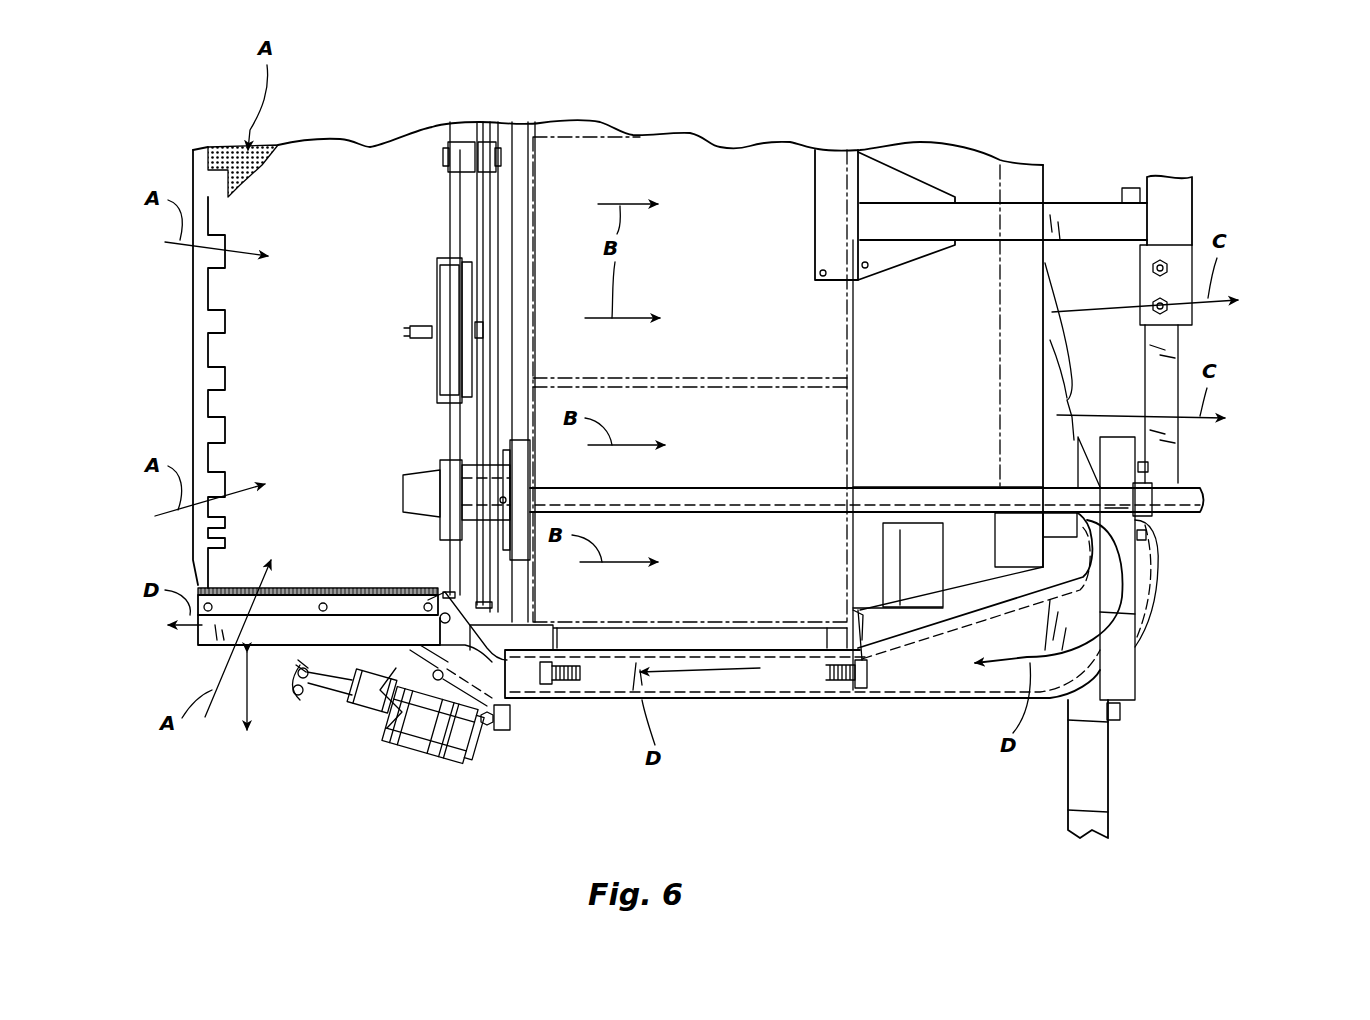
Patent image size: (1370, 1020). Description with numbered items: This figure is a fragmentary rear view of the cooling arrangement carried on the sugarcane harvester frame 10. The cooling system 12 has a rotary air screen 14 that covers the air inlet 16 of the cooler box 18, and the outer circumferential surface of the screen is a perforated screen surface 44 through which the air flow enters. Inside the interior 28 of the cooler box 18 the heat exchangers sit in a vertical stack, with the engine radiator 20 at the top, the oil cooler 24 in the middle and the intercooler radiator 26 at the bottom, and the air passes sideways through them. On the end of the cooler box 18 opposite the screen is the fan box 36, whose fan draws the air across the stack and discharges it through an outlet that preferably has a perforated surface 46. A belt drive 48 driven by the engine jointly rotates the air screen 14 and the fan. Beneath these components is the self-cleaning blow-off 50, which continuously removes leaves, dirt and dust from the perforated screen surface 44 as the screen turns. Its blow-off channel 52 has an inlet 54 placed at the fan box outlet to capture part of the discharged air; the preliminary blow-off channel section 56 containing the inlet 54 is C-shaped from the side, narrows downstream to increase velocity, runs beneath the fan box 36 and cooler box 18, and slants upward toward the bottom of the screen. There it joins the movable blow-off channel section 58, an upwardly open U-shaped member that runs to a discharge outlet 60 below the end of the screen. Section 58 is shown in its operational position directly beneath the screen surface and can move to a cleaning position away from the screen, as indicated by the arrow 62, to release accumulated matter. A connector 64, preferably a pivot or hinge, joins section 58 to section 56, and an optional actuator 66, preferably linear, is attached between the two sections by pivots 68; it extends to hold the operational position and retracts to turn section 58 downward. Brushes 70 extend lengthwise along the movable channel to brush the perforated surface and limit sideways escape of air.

The sugarcane harvester frame 10 is at (1311, 152).
The cooling system 12 is at (192, 148).
The rotary air screen 14 is at (303, 142).
The air inlet 16 is at (512, 193).
The cooler box 18 is at (575, 118).
The engine radiator 20 is at (606, 152).
The oil cooler 24 is at (640, 400).
The intercooler radiator 26 is at (757, 535).
The interior 28 is at (783, 167).
The fan box 36 is at (972, 160).
The perforated screen surface 44 is at (233, 150).
The perforated surface 46 is at (1045, 185).
The belt drive 48 is at (1205, 494).
The self-cleaning blow-off 50 is at (372, 635).
The blow-off channel 52 is at (745, 700).
The inlet 54 is at (1075, 455).
The preliminary blow-off channel section 56 is at (822, 698).
The movable blow-off channel section 58 is at (280, 632).
The discharge outlet 60 is at (198, 640).
The arrow 62 is at (255, 700).
The connector 64 is at (413, 740).
The actuator 66 is at (468, 762).
The pivots 68 is at (300, 700).
The brushes 70 is at (325, 590).